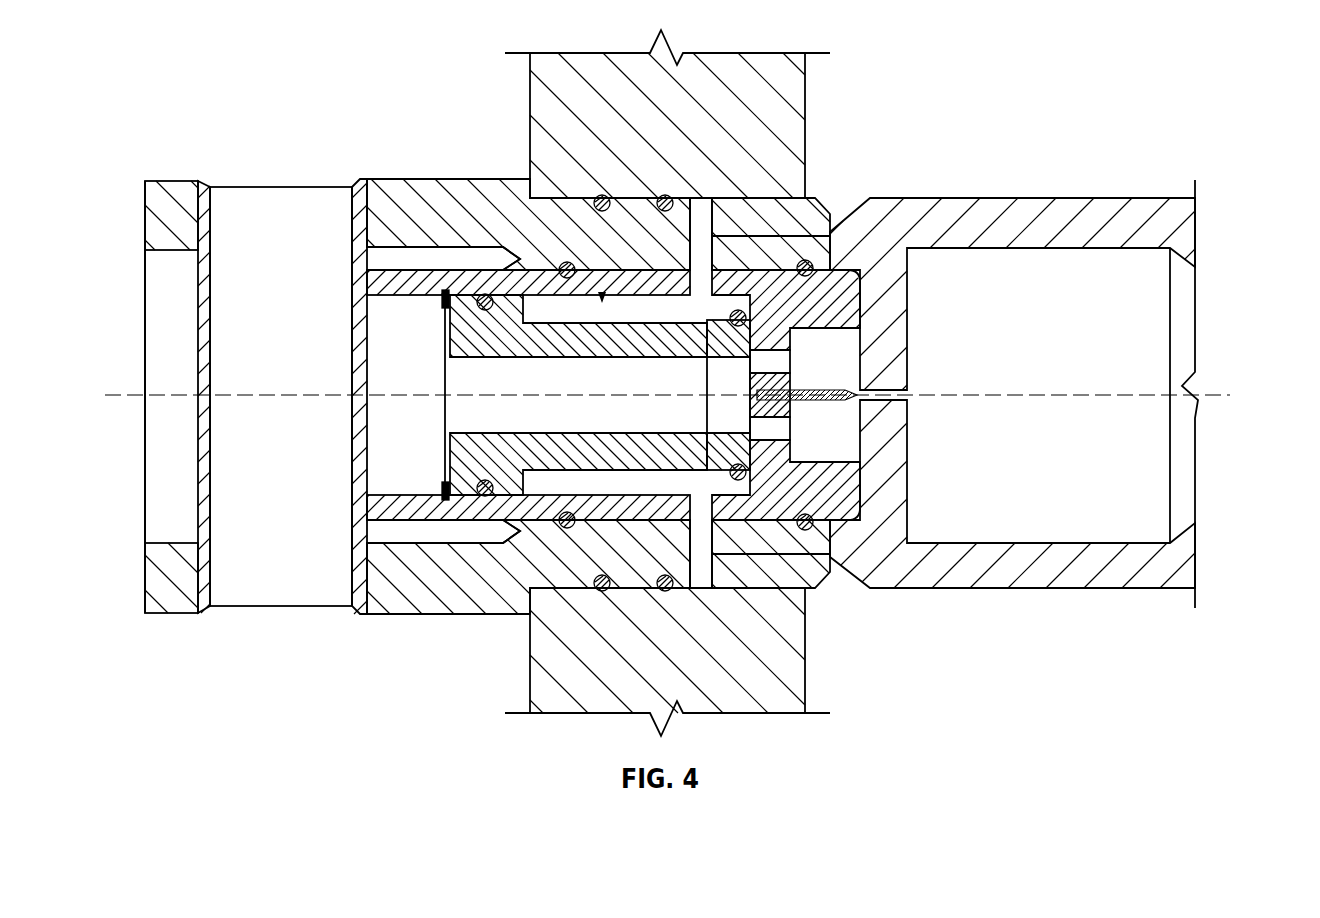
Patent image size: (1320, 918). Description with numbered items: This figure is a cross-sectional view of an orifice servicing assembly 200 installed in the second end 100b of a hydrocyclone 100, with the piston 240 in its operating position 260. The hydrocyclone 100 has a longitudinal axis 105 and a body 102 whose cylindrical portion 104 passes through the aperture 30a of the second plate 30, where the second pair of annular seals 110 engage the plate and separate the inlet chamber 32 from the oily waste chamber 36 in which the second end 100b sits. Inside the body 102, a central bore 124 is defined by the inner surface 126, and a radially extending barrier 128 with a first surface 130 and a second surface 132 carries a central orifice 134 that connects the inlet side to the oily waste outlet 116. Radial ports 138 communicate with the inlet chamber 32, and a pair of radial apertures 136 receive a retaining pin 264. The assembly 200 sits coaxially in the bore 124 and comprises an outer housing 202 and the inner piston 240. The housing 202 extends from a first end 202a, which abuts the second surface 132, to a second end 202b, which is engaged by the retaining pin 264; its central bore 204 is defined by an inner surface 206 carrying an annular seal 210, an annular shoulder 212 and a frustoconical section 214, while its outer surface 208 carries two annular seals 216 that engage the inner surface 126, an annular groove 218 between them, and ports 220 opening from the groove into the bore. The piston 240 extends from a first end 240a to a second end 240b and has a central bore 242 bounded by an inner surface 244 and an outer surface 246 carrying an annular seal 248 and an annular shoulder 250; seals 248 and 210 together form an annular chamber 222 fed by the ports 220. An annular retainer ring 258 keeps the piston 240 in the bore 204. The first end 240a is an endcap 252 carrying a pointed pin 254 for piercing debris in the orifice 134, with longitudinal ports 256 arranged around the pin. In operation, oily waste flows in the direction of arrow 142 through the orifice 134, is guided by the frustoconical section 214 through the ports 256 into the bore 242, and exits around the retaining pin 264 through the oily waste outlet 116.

The second plate 30 is at (793, 100).
The aperture of second plate 30a is at (808, 592).
The inlet chamber 32 is at (897, 99).
The oily waste chamber 36 is at (400, 102).
The hydrocyclone 100 is at (1032, 208).
The second end 100b is at (190, 182).
The body 102 is at (1138, 208).
The cylindrical portion 104 is at (1087, 582).
The longitudinal axis 105 is at (1226, 395).
The second pair of annular seals 110 is at (605, 196).
The oily waste outlet 116 is at (158, 335).
The central bore 124 is at (1032, 483).
The inner surface 126 is at (990, 543).
The barrier 128 is at (892, 284).
The first surface 130 is at (910, 345).
The second surface 132 is at (868, 465).
The orifice 134 is at (908, 397).
The radial apertures 136 is at (255, 200).
The radial ports 138 is at (762, 202).
The arrow 142 is at (1056, 320).
The orifice servicing assembly 200 is at (450, 228).
The outer housing 202 is at (866, 492).
The first end of housing 202a is at (892, 264).
The second end of housing 202b is at (370, 503).
The central bore of housing 204 is at (393, 388).
The inner surface of housing 206 is at (385, 490).
The outer surface of housing 208 is at (397, 283).
The annular seal 210 is at (702, 216).
The annular shoulder 212 is at (695, 335).
The frustoconical section 214 is at (868, 455).
The annular seals 216 is at (563, 590).
The annular groove 218 is at (790, 592).
The ports 220 is at (693, 276).
The annular chamber 222 is at (630, 592).
The piston 240 is at (492, 436).
The first end of piston 240a is at (885, 335).
The second end of piston 240b is at (443, 308).
The central bore of piston 242 is at (575, 426).
The inner surface of piston 244 is at (627, 432).
The outer surface of piston 246 is at (618, 352).
The annular seal 248 is at (508, 352).
The annular shoulder 250 is at (555, 348).
The endcap 252 is at (808, 262).
The pin 254 is at (868, 376).
The longitudinal ports 256 is at (778, 365).
The retainer ring 258 is at (442, 486).
The operating position 260 is at (520, 242).
The retaining pin 264 is at (205, 562).